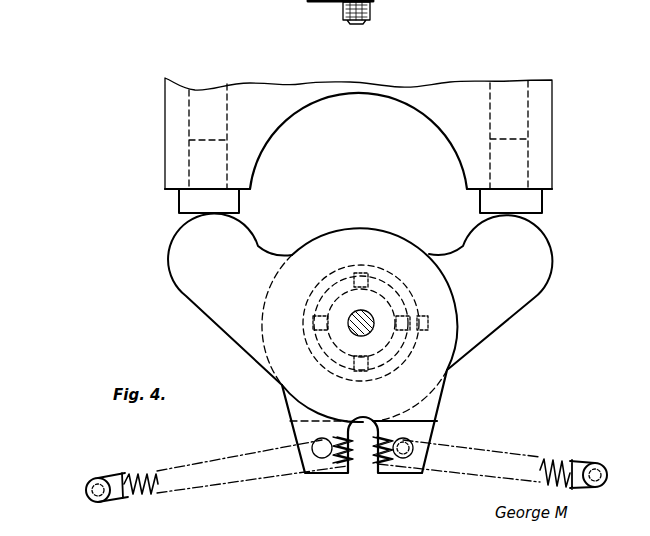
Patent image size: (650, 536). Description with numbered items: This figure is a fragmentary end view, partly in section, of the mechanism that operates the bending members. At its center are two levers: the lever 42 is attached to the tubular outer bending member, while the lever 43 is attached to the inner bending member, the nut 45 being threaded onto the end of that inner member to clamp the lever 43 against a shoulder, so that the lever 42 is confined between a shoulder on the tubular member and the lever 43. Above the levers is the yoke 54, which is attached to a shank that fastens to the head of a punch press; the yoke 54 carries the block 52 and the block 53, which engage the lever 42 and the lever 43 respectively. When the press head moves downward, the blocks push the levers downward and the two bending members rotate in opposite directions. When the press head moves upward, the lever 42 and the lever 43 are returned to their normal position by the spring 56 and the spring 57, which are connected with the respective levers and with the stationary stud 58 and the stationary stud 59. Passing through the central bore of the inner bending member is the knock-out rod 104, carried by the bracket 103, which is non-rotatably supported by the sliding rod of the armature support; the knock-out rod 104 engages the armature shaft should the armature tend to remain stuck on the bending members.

The lever 42 is at (540, 233).
The lever 43 is at (170, 260).
The nut 45 is at (388, 285).
The block 52 is at (540, 198).
The block 53 is at (180, 205).
The yoke 54 is at (440, 105).
The spring 56 is at (228, 485).
The spring 57 is at (500, 452).
The stationary stud 58 is at (95, 480).
The stationary stud 59 is at (600, 461).
The bracket 103 is at (315, 12).
The knock-out rod 104 is at (370, 316).